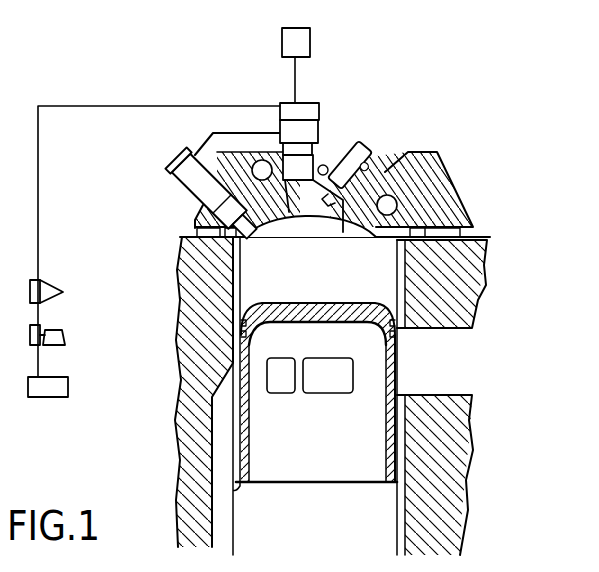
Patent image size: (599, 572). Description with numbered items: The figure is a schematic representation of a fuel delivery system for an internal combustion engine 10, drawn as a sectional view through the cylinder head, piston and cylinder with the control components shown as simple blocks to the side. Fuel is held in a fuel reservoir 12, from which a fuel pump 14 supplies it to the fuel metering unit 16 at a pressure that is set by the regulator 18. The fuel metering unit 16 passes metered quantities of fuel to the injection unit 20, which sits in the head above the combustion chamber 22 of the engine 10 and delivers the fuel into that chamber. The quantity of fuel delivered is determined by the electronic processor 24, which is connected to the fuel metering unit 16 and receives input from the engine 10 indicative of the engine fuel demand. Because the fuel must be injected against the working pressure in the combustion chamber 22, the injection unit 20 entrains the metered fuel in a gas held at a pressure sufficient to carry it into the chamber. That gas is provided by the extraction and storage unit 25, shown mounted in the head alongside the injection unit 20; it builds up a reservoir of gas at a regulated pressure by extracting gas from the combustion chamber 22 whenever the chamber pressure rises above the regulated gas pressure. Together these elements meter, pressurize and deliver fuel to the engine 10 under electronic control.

The internal combustion engine 10 is at (465, 180).
The fuel reservoir 12 is at (68, 392).
The fuel pump 14 is at (65, 336).
The fuel metering unit 16 is at (319, 101).
The regulator 18 is at (63, 292).
The injection unit 20 is at (318, 143).
The combustion chamber 22 is at (318, 239).
The electronic processor 24 is at (311, 44).
The extraction and storage unit 25 is at (190, 189).